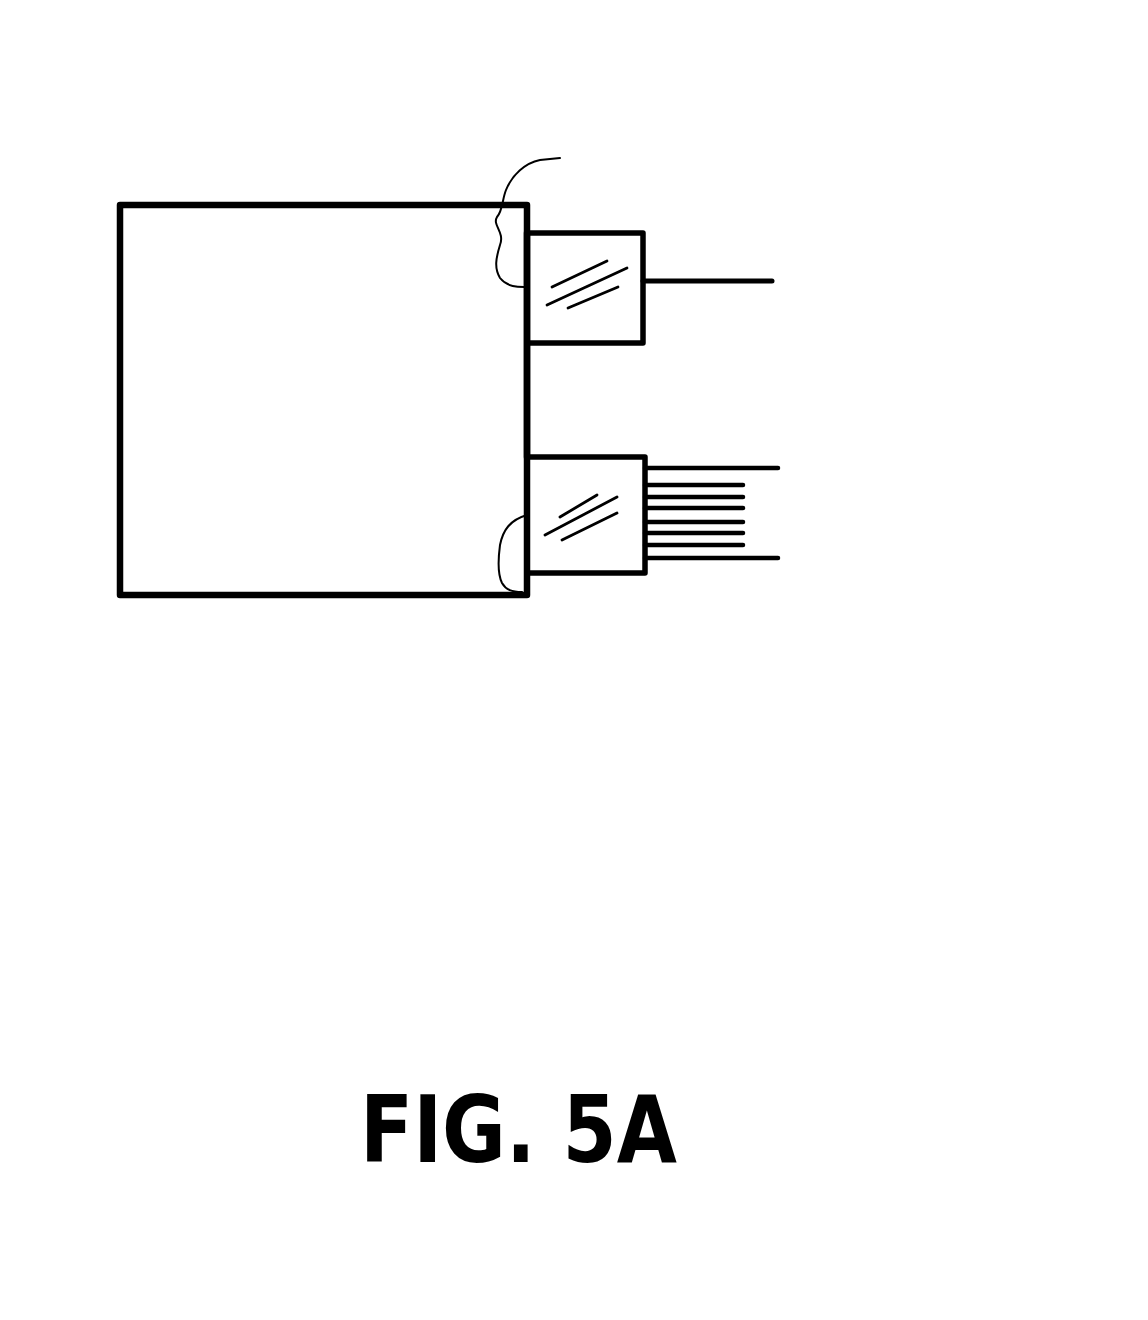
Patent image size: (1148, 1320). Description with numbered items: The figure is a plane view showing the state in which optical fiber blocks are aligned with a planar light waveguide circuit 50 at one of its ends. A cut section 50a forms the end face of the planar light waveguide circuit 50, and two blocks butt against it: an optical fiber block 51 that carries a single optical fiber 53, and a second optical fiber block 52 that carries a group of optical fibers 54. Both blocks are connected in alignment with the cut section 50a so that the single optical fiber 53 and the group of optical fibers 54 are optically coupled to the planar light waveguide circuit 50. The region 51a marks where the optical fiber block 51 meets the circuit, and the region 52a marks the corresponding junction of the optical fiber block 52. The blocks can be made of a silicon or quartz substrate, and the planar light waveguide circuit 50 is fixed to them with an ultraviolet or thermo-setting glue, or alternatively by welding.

The planar light waveguide circuit 50 is at (335, 273).
The cut section 50a is at (532, 392).
The optical fiber block 51 is at (580, 273).
The coupling portion of first optical element 51a is at (557, 206).
The optical fiber block 52 is at (577, 537).
The coupling portion of second optical element 52a is at (503, 585).
The single optical fiber 53 is at (720, 280).
The group of optical fibers 54 is at (813, 577).